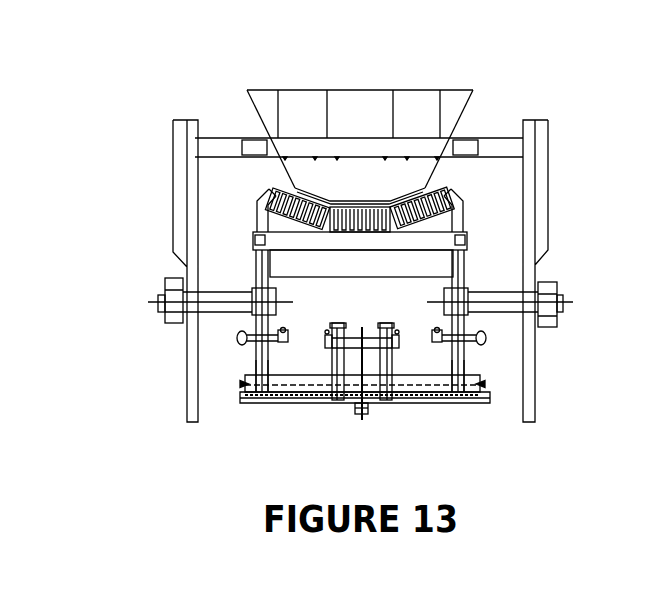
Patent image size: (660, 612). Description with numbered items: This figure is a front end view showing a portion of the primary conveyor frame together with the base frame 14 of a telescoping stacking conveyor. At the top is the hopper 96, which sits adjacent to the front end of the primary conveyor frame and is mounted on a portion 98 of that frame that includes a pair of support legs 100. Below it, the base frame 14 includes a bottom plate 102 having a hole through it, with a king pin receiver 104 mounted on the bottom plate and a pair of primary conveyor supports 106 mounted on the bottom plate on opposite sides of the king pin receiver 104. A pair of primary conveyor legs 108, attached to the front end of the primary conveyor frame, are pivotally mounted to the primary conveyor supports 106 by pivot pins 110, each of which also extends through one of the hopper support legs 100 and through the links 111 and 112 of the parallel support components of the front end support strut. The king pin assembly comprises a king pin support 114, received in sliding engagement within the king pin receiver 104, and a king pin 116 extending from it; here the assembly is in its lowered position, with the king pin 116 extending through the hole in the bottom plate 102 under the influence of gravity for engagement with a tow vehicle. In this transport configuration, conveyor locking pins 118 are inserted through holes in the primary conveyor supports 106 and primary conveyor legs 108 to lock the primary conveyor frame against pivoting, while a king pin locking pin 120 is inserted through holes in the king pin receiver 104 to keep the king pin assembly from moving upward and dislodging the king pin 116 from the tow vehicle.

The base frame 14 is at (366, 251).
The hopper 96 is at (360, 126).
The portion of primary conveyor frame 98 is at (384, 124).
The support legs 100 is at (192, 352).
The bottom plate 102 is at (354, 414).
The king pin receiver 104 is at (291, 368).
The primary conveyor supports 106 is at (487, 371).
The primary conveyor legs 108 is at (387, 289).
The pivot pins 110 is at (360, 272).
The link 111 is at (589, 294).
The link 112 is at (138, 277).
The king pin support 114 is at (365, 368).
The king pin 116 is at (407, 426).
The conveyor locking pins 118 is at (361, 326).
The king pin locking pin 120 is at (370, 343).